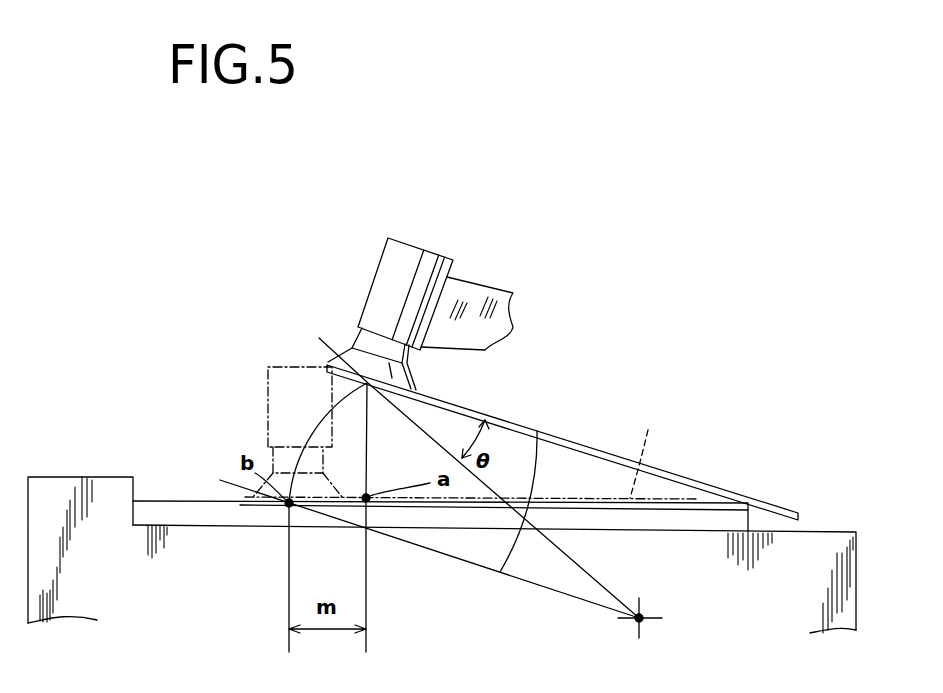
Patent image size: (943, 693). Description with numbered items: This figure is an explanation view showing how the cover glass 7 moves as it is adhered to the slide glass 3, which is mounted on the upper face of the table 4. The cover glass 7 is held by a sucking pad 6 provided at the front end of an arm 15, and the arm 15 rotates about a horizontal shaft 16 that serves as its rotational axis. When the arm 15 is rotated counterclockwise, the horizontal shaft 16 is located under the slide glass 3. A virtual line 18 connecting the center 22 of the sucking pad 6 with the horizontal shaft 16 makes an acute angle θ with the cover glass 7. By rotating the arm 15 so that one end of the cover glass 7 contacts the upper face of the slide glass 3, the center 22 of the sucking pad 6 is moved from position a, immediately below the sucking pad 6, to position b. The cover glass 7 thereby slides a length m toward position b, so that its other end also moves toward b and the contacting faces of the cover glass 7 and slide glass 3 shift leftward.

The slide glass 3 is at (163, 507).
The table 4 is at (810, 547).
The sucking pad 6 is at (356, 357).
The cover glass 7 is at (623, 462).
The arm 15 is at (481, 290).
The horizontal shaft 16 is at (637, 624).
The virtual line 18 is at (495, 493).
The center of the sucking pad 22 is at (372, 388).